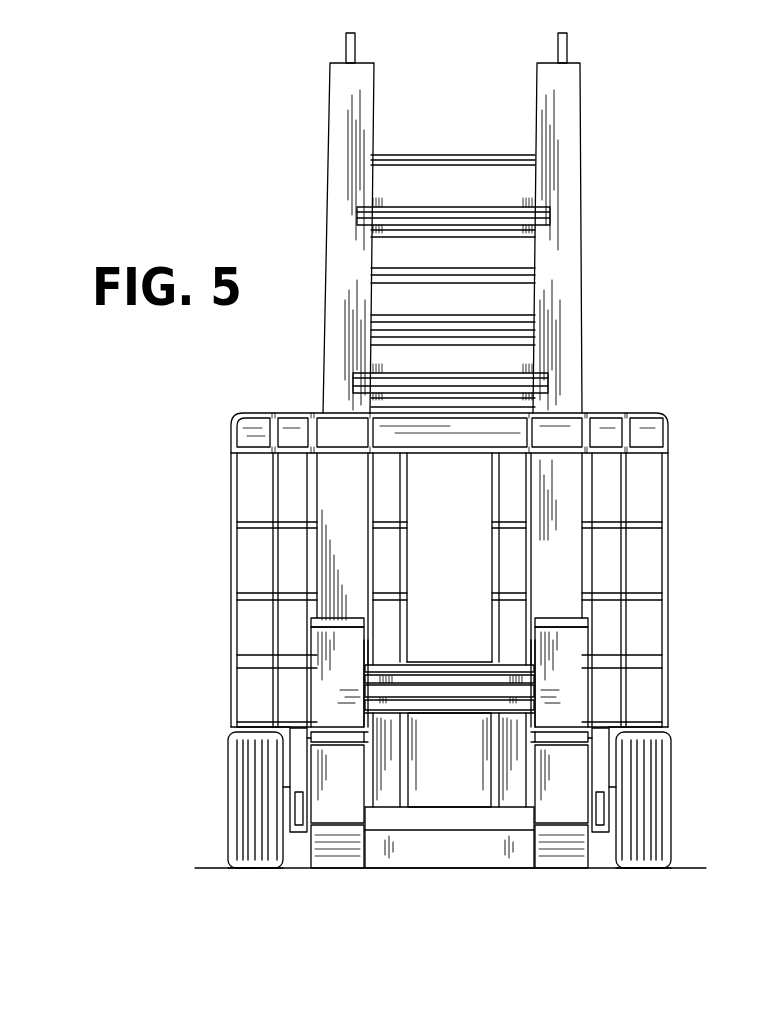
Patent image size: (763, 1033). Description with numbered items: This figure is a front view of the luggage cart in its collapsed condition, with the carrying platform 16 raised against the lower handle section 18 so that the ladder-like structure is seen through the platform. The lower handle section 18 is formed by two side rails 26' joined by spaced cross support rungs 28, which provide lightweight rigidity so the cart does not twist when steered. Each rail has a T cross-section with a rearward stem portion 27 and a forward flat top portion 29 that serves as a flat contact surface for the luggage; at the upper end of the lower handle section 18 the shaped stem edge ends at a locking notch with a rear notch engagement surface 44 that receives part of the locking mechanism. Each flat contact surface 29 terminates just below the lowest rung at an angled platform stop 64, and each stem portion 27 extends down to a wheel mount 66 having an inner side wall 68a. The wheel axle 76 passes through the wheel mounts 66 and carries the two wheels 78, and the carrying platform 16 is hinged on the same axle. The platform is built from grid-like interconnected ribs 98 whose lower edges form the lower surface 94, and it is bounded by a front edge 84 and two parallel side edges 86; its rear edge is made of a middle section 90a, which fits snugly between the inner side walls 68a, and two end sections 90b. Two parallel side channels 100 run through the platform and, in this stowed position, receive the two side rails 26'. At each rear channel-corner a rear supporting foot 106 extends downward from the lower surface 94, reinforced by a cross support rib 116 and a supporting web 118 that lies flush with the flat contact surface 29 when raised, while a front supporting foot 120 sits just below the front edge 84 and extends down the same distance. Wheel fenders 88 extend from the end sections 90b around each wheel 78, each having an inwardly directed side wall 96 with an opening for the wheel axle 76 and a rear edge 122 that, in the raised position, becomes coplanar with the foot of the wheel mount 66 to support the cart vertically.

The carrying platform 16 is at (682, 520).
The lower handle section 18 is at (584, 253).
The side rails of the lower handle section 26' is at (453, 240).
The stem portion 27 is at (346, 45).
The cross support rungs 28 is at (414, 207).
The flat top portion (flat contact surface) 29 is at (565, 163).
The rear notch engagement surface 44 is at (566, 46).
The angled platform stop 64 is at (515, 843).
The wheel mount 66 is at (352, 866).
The inner side wall 68a is at (530, 768).
The wheel axle 76 is at (298, 803).
The wheels 78 is at (240, 815).
The front edge 84 is at (615, 418).
The side edges 86 is at (231, 587).
The wheel fenders 88 is at (232, 762).
The middle rear edge section 90a is at (395, 693).
The end rear edge sections 90b is at (262, 738).
The lower surface 94 is at (668, 440).
The inwardly directed side wall 96 is at (293, 765).
The ribs 98 is at (253, 523).
The side channels 100 is at (540, 485).
The rear supporting foot 106 is at (366, 700).
The cross support rib 116 is at (552, 740).
The supporting web 118 is at (525, 718).
The front supporting foot 120 is at (262, 414).
The rear edge of wheel fender 122 is at (286, 870).